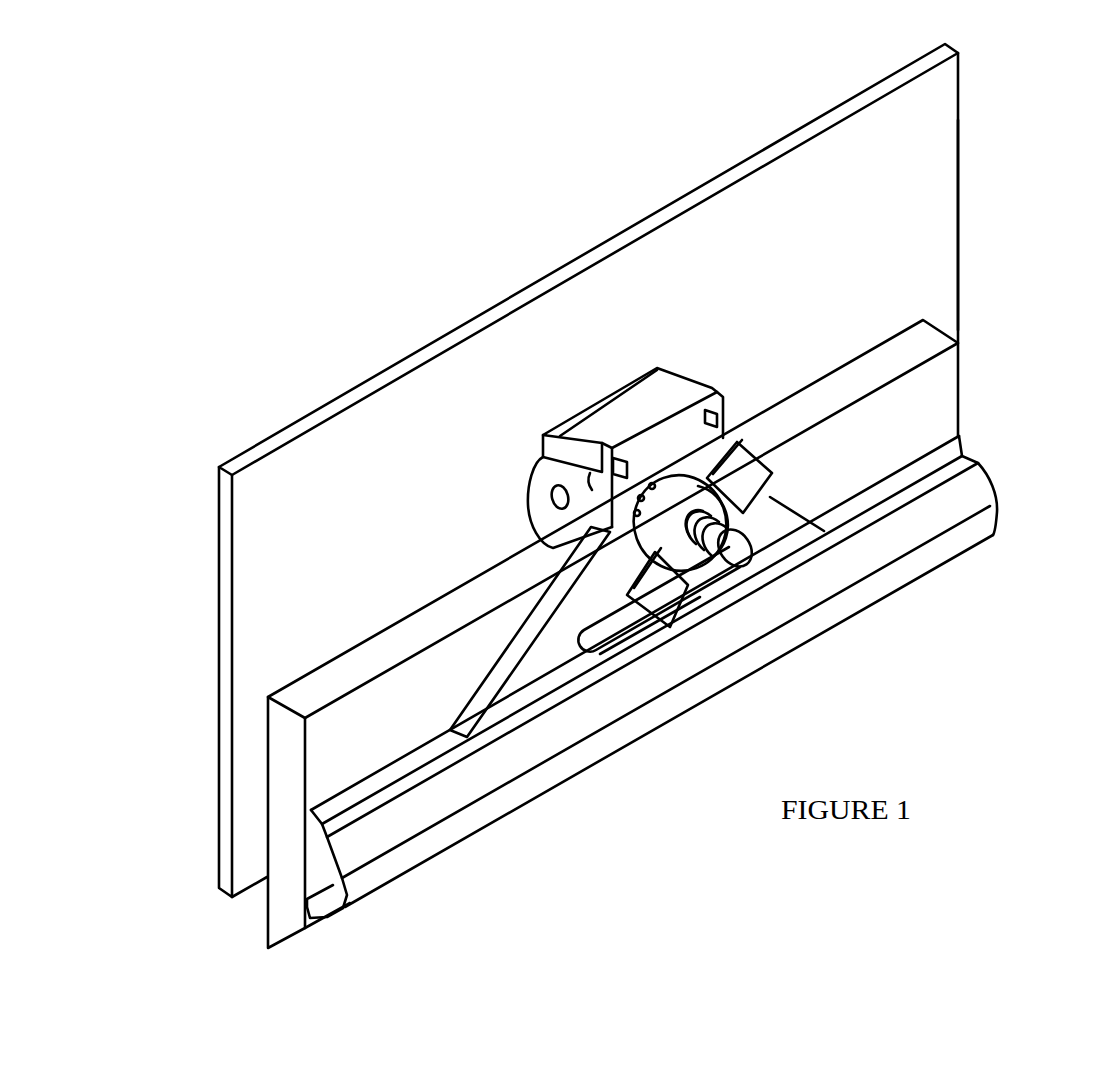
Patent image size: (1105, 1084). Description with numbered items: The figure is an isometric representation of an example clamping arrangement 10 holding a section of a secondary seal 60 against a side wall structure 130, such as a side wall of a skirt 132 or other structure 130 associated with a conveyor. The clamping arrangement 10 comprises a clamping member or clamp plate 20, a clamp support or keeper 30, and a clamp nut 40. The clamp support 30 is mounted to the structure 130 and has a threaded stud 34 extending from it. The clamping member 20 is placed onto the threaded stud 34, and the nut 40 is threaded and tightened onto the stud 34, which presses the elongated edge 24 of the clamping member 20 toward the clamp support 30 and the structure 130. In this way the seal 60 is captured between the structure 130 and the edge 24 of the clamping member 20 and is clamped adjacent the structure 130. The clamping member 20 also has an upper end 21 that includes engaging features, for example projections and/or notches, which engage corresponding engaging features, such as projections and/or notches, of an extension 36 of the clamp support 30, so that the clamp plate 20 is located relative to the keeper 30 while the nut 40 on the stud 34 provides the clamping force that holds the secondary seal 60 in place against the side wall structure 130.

The clamping arrangement 10 is at (1012, 373).
The clamping member 20 is at (984, 481).
The upper end 21 is at (719, 392).
The elongated edge 24 is at (582, 758).
The clamp support 30 is at (617, 392).
The threaded stud 34 is at (727, 560).
The extension 36 is at (675, 385).
The clamp nut 40 is at (750, 440).
The secondary seal 60 is at (942, 406).
The side wall structure 130 is at (962, 168).
The skirt 132 is at (960, 240).